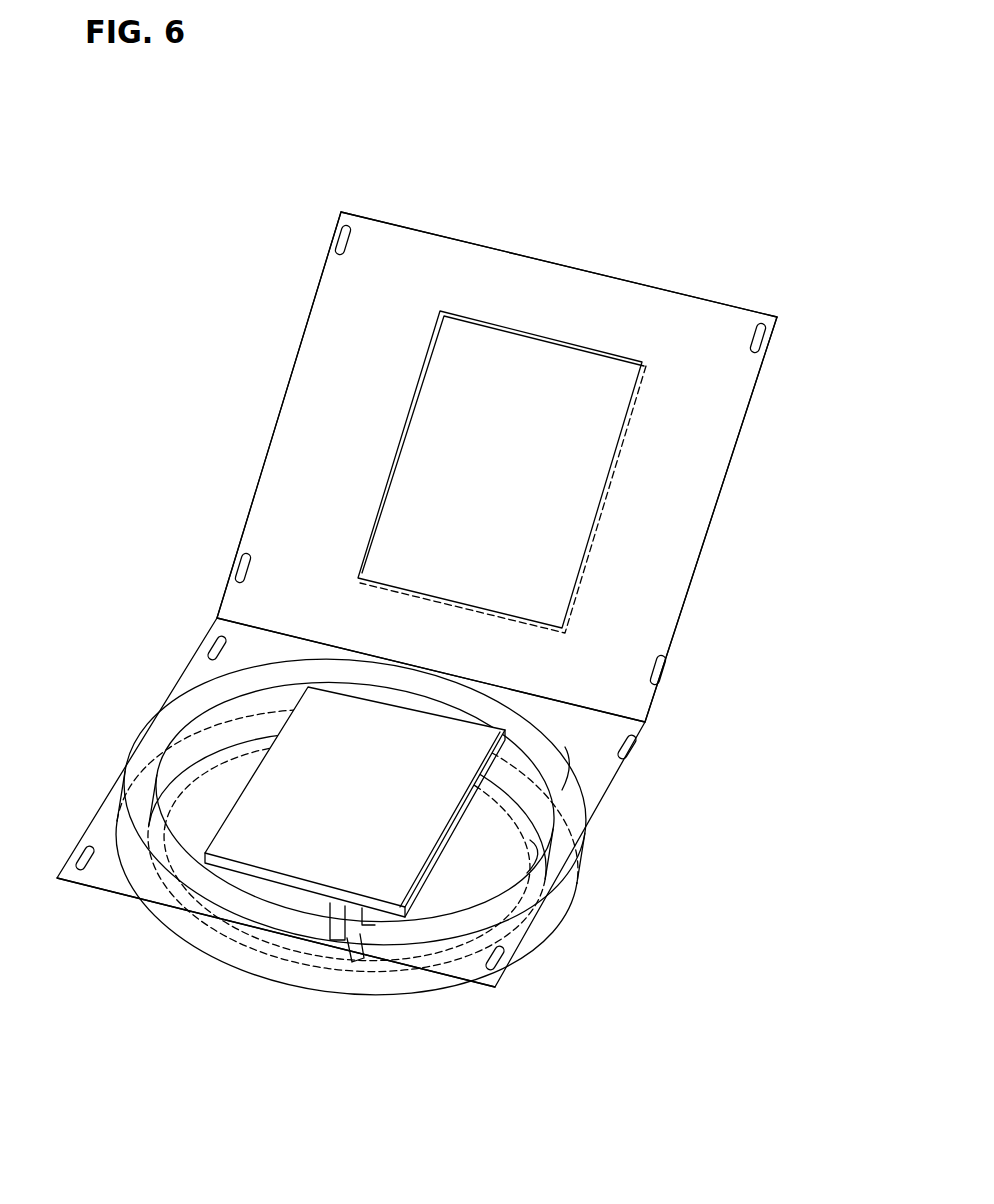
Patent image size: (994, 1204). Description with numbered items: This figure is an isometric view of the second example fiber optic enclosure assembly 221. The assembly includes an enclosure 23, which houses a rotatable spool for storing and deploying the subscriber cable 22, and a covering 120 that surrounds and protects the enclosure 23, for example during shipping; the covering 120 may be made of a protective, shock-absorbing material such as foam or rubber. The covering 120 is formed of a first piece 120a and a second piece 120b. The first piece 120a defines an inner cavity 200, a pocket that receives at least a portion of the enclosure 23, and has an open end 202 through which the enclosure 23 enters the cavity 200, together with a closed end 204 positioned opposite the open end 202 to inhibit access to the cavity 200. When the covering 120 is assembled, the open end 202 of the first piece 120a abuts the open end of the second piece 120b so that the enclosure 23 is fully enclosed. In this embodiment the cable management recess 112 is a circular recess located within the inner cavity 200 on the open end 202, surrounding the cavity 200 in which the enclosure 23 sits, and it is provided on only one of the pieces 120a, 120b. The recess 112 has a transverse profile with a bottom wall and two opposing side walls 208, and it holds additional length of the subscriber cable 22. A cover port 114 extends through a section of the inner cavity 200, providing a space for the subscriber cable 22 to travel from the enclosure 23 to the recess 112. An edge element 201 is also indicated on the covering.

The subscriber cable 22 is at (563, 837).
The enclosure 23 is at (330, 722).
The cable management recess 112 is at (150, 752).
The cover port 114 is at (347, 913).
The covering 120 is at (193, 562).
The first piece 120a is at (507, 943).
The second piece 120b is at (717, 430).
The inner cavity 200 is at (130, 800).
The plate edge 201 is at (618, 268).
The open end 202 is at (680, 525).
The closed end 204 is at (493, 243).
The side walls 208 is at (562, 777).
The fiber optic enclosure assembly 221 is at (757, 283).